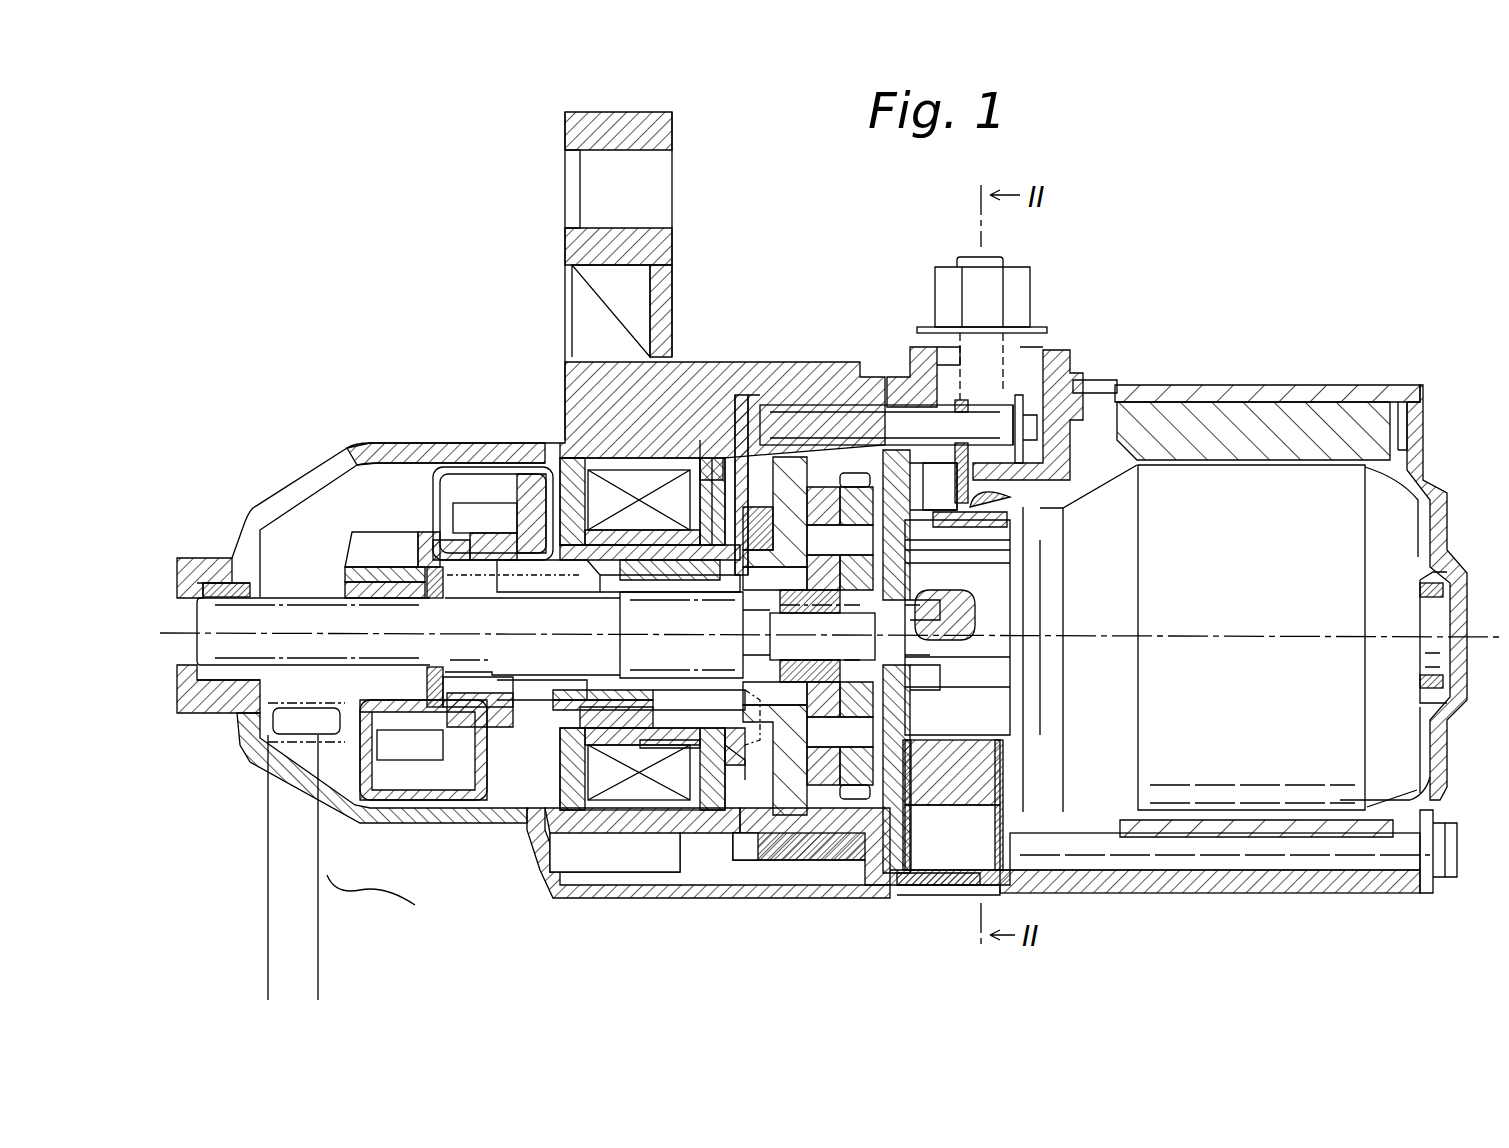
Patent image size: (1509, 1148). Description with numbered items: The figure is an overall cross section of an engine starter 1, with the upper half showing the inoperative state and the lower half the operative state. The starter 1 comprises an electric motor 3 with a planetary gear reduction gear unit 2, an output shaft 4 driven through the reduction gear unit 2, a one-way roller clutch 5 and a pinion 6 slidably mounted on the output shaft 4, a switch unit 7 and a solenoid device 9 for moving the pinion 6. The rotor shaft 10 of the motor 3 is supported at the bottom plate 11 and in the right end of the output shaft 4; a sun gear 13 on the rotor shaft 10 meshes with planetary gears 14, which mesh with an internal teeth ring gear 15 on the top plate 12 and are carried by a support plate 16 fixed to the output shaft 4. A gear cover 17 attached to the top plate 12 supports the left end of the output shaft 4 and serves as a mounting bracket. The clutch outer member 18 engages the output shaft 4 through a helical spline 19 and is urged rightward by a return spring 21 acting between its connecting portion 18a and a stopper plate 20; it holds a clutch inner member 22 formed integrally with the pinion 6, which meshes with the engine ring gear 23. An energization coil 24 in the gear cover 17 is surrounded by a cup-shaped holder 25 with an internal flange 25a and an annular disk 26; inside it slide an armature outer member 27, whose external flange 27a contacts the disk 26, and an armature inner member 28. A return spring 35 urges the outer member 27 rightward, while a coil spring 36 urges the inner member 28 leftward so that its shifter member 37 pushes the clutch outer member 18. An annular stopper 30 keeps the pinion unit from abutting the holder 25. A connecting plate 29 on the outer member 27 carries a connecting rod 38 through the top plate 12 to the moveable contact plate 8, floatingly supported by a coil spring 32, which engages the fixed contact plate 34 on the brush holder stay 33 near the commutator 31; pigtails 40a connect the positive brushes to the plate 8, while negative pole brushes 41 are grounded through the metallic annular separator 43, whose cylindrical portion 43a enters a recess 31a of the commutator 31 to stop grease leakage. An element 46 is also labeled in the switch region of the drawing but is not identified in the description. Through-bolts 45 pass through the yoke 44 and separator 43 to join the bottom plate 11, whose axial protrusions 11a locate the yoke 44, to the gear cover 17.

The engine starter 1 is at (1150, 276).
The planetary gear reduction gear unit 2 is at (826, 457).
The electric motor 3 is at (1255, 460).
The output shaft 4 is at (294, 608).
The one-way roller clutch 5 is at (440, 492).
The pinion 6 is at (365, 545).
The switch unit 7 is at (942, 370).
The moveable contact plate 8 is at (958, 400).
The solenoid device 9 is at (680, 400).
The rotor shaft 10 is at (1440, 625).
The bottom plate 11 is at (1455, 700).
The axial protrusions 11a is at (1398, 395).
The top plate 12 is at (785, 862).
The sun gear 13 is at (1010, 872).
The planetary gears 14 is at (858, 458).
The internal teeth ring gear 15 is at (858, 802).
The support plate 16 is at (828, 800).
The gear cover 17 is at (500, 825).
The clutch outer member 18 is at (432, 805).
The connecting portion 18a is at (490, 765).
The helical spline 19 is at (555, 690).
The stopper plate 20 is at (427, 687).
The return spring 21 is at (498, 580).
The clutch inner member 22 is at (355, 740).
The ring gear 23 is at (266, 825).
The energization coil 24 is at (612, 810).
The cup-shaped holder 25 is at (600, 468).
The internal flange 25a is at (560, 735).
The annular disk 26 is at (702, 445).
The armature outer member 27 is at (655, 745).
The external flange 27a is at (735, 790).
The armature inner member 28 is at (672, 697).
The annular connecting plate 29 is at (742, 395).
The annular stopper 30 is at (550, 830).
The commutator 31 is at (1008, 770).
The recess 31a is at (1000, 550).
The coil spring 32 is at (1010, 370).
The brush holder stay 33 is at (940, 887).
The fixed contact plate 34 is at (920, 395).
The return spring 35 is at (620, 548).
The coil spring 36 is at (742, 768).
The shifter member 37 is at (600, 565).
The connecting rod 38 is at (790, 405).
The pigtails 40a is at (1040, 497).
The negative pole brushes 41 is at (1003, 805).
The metallic annular separator 43 is at (912, 887).
The cylindrical portion 43a is at (975, 605).
The yoke 44 is at (1232, 893).
The through-bolts 45 is at (1168, 850).
The lead wire 46 is at (1075, 445).